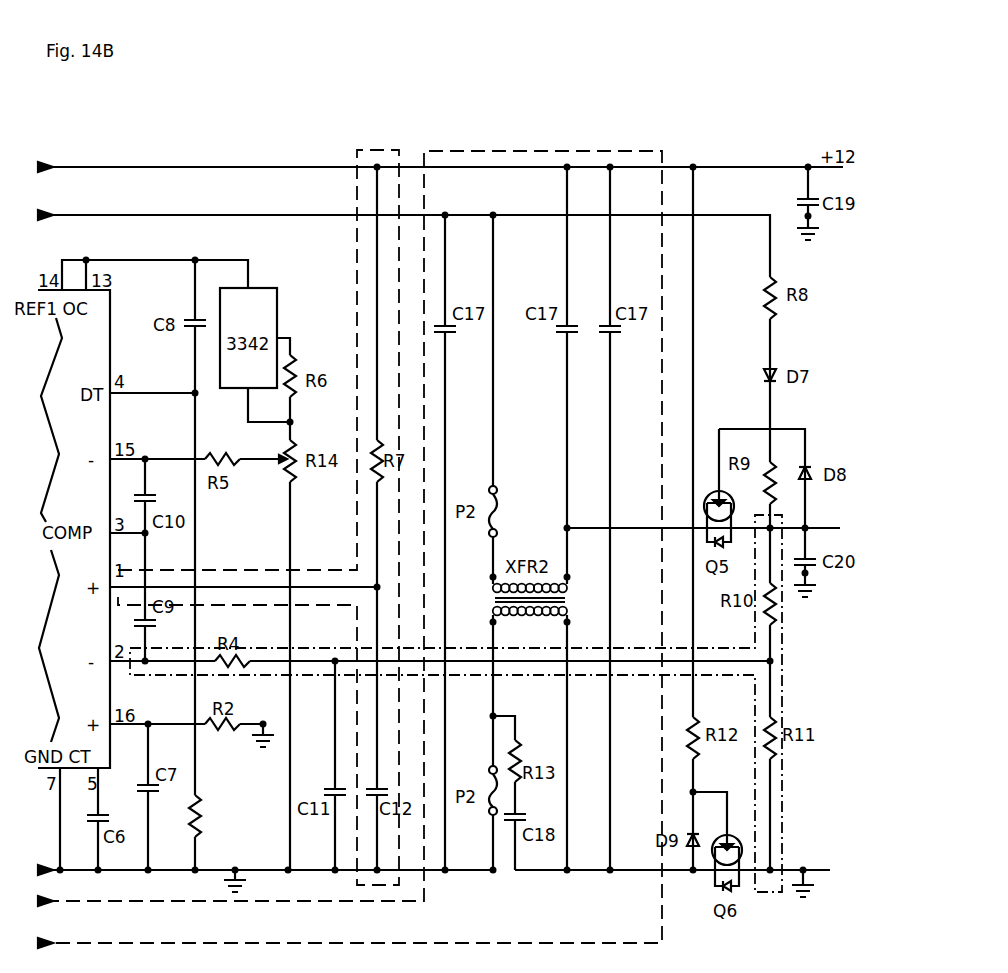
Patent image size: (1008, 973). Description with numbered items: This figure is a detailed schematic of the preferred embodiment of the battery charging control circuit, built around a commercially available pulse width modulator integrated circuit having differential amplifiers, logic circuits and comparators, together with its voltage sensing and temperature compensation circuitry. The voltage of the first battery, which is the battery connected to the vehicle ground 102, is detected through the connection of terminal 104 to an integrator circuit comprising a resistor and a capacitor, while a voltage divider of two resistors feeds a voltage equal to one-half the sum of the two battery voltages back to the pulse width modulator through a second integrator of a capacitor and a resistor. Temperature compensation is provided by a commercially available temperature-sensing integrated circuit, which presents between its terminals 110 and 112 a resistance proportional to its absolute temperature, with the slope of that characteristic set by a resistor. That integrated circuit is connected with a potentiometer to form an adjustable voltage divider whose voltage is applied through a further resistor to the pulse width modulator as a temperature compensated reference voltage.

The vehicle ground 102 is at (823, 876).
The terminal 104 is at (765, 170).
The terminal of integrated circuit U5 110 is at (212, 260).
The terminal of integrated circuit U5 112 is at (246, 404).